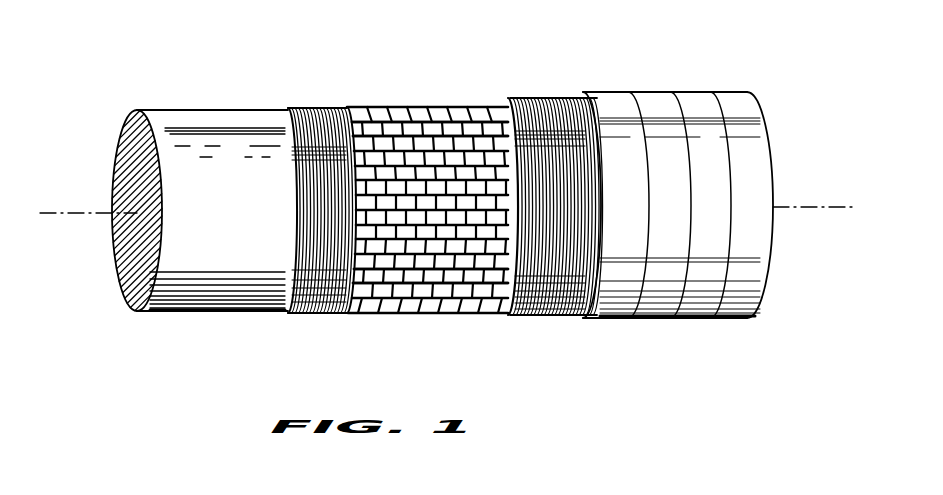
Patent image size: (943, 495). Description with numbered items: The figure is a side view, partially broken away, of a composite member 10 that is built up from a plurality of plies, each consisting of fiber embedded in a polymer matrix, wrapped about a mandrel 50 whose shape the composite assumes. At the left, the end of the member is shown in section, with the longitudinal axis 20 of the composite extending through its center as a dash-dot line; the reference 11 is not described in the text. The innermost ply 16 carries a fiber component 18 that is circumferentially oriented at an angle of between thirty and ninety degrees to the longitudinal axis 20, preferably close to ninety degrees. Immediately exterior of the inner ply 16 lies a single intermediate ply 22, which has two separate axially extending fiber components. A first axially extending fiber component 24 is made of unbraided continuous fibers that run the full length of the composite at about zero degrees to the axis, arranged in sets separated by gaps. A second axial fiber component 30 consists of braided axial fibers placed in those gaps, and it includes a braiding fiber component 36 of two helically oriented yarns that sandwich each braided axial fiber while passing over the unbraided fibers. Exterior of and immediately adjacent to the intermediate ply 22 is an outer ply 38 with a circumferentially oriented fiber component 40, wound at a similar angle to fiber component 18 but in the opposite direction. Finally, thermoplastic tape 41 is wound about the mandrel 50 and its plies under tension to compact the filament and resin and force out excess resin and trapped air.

The composite member 10 is at (446, 66).
The end face of pipe 11 is at (137, 155).
The innermost ply 16 is at (290, 101).
The fiber component 18 is at (272, 300).
The longitudinal axis 20 is at (822, 207).
The intermediate ply 22 is at (447, 318).
The first axially extending fiber component 24 is at (396, 118).
The second axial fiber component 30 is at (374, 305).
The braiding fiber component 36 is at (458, 302).
The outer ply 38 is at (541, 96).
The circumferentially oriented fiber component 40 is at (545, 313).
The thermoplastic tape 41 is at (646, 94).
The mandrel 50 is at (195, 288).